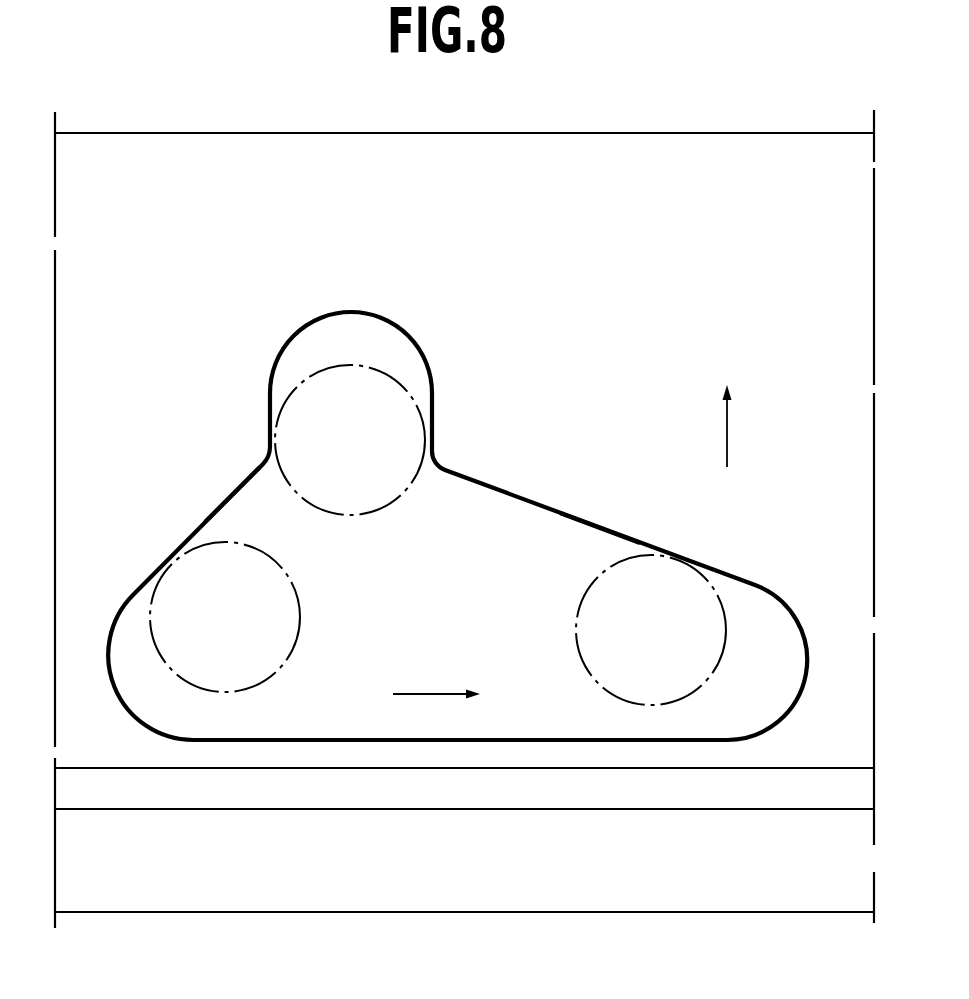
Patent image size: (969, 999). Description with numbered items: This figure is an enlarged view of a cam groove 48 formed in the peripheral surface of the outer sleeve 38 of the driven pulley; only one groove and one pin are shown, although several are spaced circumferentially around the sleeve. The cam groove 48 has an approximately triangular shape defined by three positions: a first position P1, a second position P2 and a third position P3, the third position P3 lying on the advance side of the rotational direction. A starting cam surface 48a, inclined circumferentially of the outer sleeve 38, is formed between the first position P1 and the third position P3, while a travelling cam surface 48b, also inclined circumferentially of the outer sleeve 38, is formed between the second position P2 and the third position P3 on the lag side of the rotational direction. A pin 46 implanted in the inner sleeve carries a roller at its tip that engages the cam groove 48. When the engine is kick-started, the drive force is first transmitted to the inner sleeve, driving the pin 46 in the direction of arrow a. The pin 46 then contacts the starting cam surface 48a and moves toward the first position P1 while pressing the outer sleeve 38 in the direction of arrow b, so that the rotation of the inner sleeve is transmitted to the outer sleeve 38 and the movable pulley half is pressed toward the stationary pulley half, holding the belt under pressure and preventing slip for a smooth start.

The outer sleeve 38 is at (429, 142).
The cam groove 48 is at (447, 624).
The starting cam surface 48a is at (592, 526).
The travelling cam surface 48b is at (229, 502).
The pin 46 is at (393, 495).
The first position P1 is at (662, 630).
The second position P2 is at (225, 617).
The third position P3 is at (350, 433).
The arrow a is at (442, 694).
The arrow b is at (727, 430).